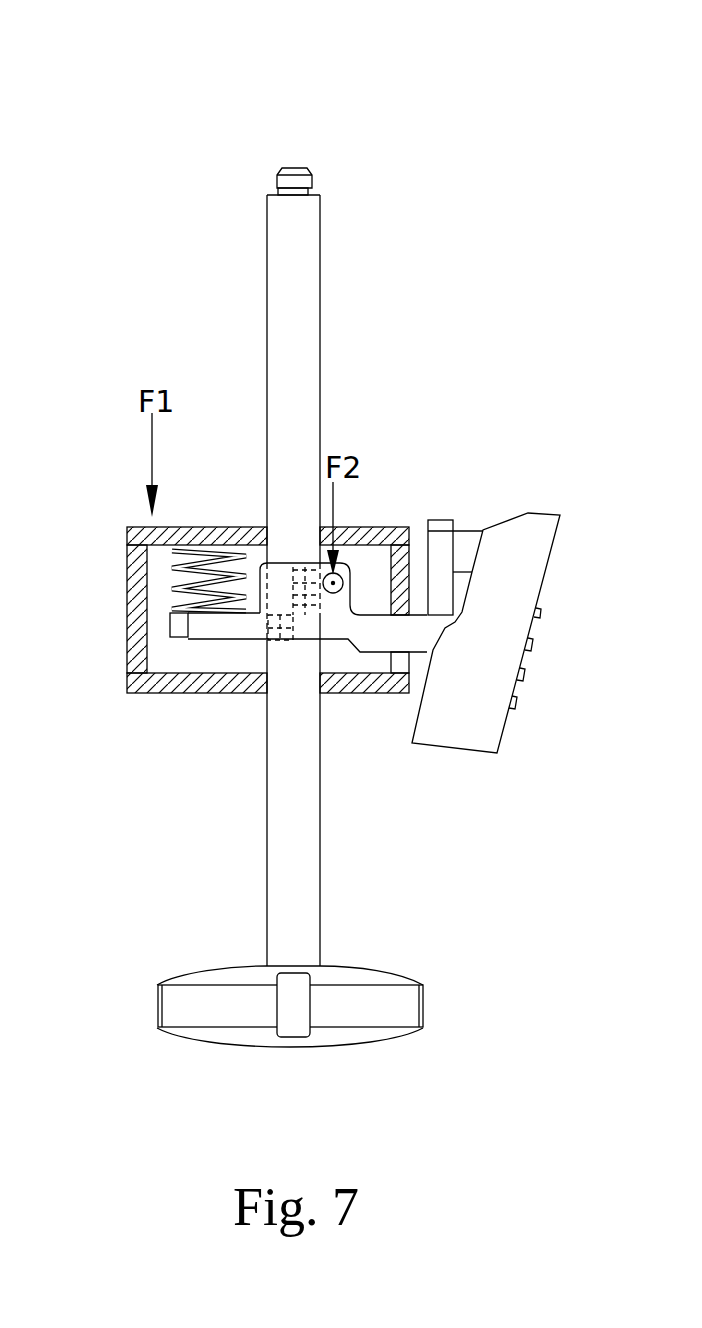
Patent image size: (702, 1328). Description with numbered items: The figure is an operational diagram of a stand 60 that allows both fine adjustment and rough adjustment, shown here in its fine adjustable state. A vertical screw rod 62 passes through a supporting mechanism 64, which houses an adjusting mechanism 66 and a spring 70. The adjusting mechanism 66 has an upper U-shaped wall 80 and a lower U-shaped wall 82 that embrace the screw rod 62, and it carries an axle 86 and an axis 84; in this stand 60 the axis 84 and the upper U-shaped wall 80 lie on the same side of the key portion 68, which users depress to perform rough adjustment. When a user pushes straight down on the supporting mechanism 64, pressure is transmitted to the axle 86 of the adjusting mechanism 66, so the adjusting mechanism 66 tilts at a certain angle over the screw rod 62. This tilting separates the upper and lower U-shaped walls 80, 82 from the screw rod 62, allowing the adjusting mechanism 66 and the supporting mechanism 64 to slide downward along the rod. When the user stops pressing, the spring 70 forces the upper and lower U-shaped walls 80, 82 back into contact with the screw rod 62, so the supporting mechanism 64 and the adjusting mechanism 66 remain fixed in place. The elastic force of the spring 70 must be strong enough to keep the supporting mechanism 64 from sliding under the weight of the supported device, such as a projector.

The stand 60 is at (528, 62).
The screw rod 62 is at (302, 297).
The supporting mechanism 64 is at (127, 657).
The adjusting mechanism 66 is at (212, 625).
The key portion 68 is at (533, 578).
The spring 70 is at (172, 587).
The upper U-shaped wall 80 is at (303, 563).
The lower U-shaped wall 82 is at (278, 647).
The axis 84 is at (333, 593).
The axle 86 is at (343, 580).